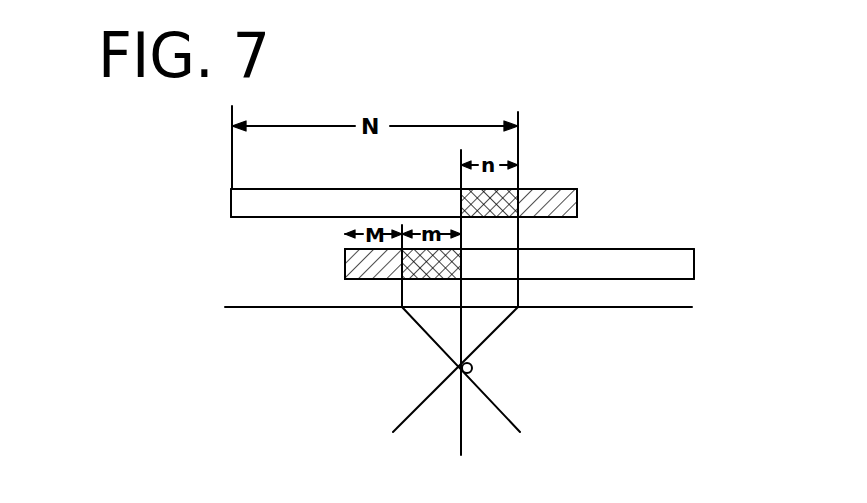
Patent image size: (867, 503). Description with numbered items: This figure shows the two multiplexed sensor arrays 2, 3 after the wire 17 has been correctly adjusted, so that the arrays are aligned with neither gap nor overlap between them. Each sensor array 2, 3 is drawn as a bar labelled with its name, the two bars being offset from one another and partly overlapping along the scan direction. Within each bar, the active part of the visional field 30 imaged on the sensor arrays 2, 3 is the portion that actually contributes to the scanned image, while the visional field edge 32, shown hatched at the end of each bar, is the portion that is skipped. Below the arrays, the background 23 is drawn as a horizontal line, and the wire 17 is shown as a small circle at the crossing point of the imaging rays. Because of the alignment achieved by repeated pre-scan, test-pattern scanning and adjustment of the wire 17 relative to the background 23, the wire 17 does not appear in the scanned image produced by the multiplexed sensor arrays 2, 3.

The sensor array 2 is at (232, 217).
The sensor array 3 is at (690, 279).
The wire 17 is at (473, 366).
The background 23 is at (250, 308).
The active part of the visional field 30 is at (352, 189).
The visional field edge 32 is at (505, 189).